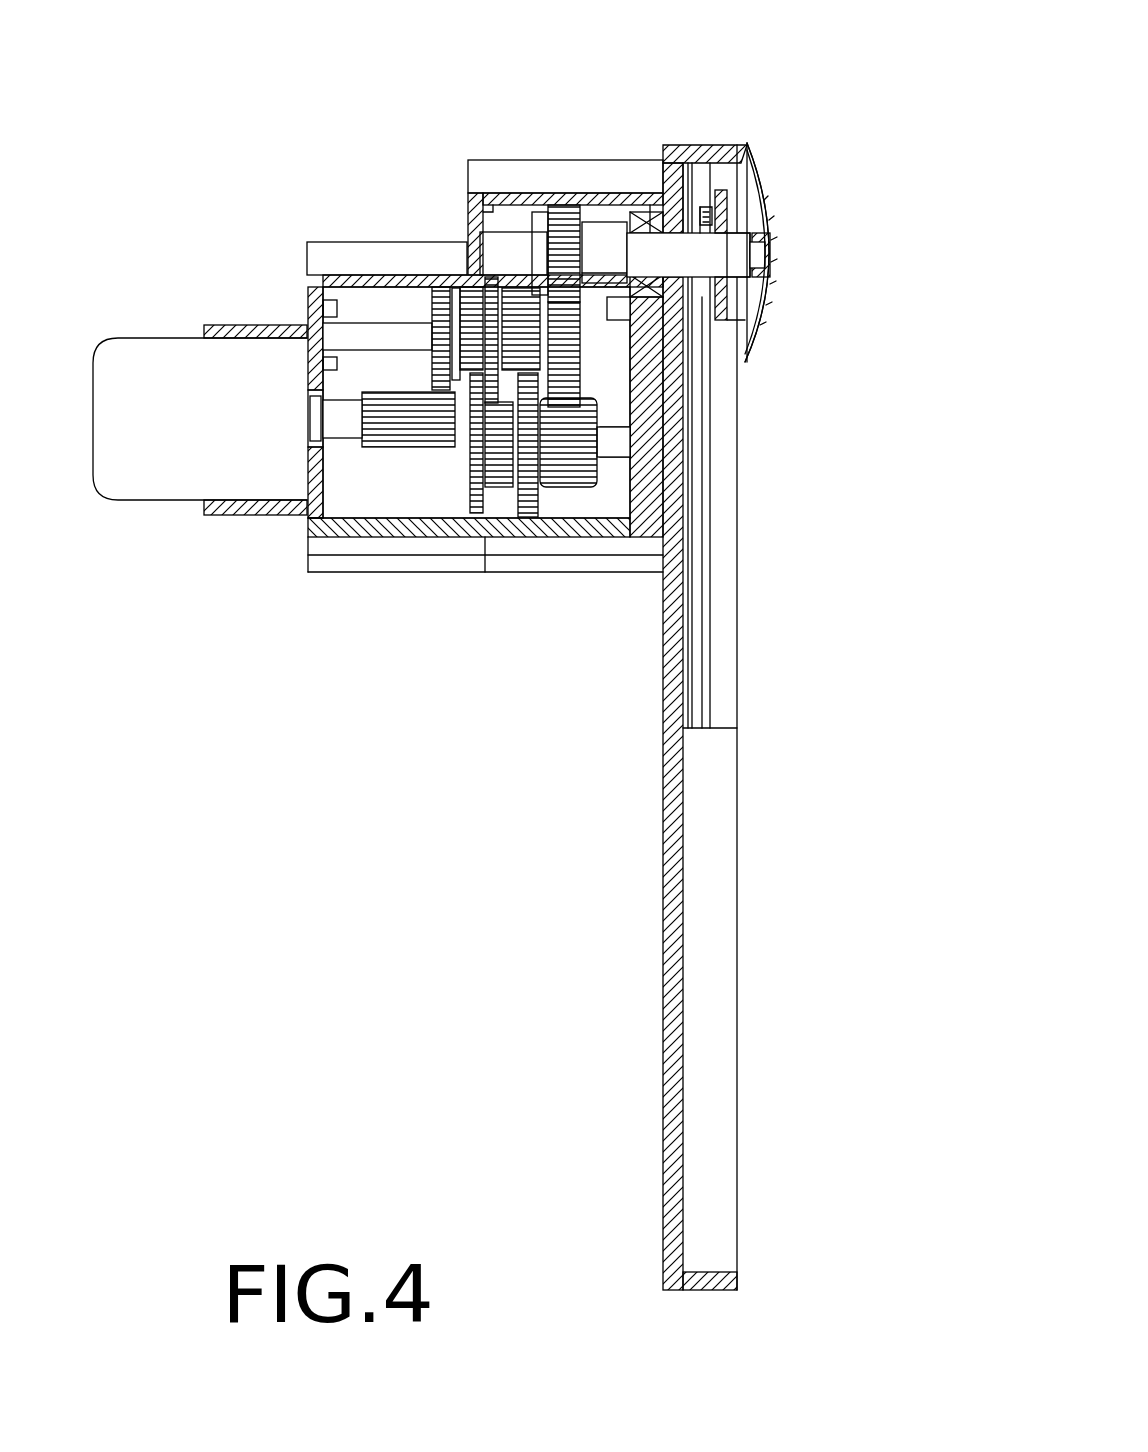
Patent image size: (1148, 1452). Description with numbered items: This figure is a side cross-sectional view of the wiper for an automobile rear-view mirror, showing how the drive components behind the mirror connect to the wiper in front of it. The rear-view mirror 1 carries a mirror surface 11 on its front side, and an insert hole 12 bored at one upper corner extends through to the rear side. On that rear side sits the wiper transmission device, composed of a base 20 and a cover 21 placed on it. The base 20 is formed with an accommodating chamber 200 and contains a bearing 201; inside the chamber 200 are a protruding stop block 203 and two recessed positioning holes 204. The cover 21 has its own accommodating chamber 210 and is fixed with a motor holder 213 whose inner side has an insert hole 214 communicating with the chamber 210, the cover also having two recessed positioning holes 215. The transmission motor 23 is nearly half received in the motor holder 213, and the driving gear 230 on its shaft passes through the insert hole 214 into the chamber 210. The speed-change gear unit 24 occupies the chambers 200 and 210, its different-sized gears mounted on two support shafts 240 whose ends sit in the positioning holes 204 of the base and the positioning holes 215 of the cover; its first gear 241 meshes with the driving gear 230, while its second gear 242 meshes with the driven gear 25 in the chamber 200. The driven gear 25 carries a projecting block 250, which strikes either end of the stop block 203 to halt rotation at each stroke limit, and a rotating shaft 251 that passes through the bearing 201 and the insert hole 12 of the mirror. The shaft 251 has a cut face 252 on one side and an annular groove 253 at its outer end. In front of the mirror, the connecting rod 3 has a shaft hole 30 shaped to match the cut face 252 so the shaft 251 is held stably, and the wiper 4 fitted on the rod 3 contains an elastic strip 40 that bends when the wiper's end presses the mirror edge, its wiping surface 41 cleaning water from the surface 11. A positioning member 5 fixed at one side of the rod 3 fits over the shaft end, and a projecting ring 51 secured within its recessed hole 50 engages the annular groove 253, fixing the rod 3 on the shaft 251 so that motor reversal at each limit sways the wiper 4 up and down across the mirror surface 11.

The rear-view mirror 1 is at (655, 1210).
The mirror surface 11 is at (686, 1162).
The insert hole 12 is at (677, 165).
The base 20 is at (537, 182).
The accommodating chamber 200 is at (513, 217).
The bearing 201 is at (651, 220).
The stop block 203 is at (593, 210).
The recessed positioning holes 204 is at (630, 442).
The cover 21 is at (330, 258).
The accommodating chamber 210 is at (427, 488).
The motor holder 213 is at (242, 513).
The insert hole 214 is at (307, 516).
The recessed positioning holes 215 is at (310, 333).
The transmission motor 23 is at (140, 365).
The driving gear 230 is at (405, 433).
The speed-change gear unit 24 is at (502, 460).
The support shafts 240 is at (387, 337).
The first gear 241 is at (442, 316).
The second gear 242 is at (567, 385).
The driven gear 25 is at (562, 216).
The projecting block 250 is at (610, 286).
The rotating shaft 251 is at (738, 375).
The cut face 252 is at (750, 318).
The annular groove 253 is at (750, 254).
The connecting rod 3 is at (730, 163).
The shaft hole 30 is at (731, 312).
The wiper 4 is at (705, 488).
The elastic strip 40 is at (711, 150).
The wiping surface 41 is at (683, 623).
The positioning member 5 is at (765, 187).
The nut 50 is at (758, 242).
The projecting ring 51 is at (727, 280).